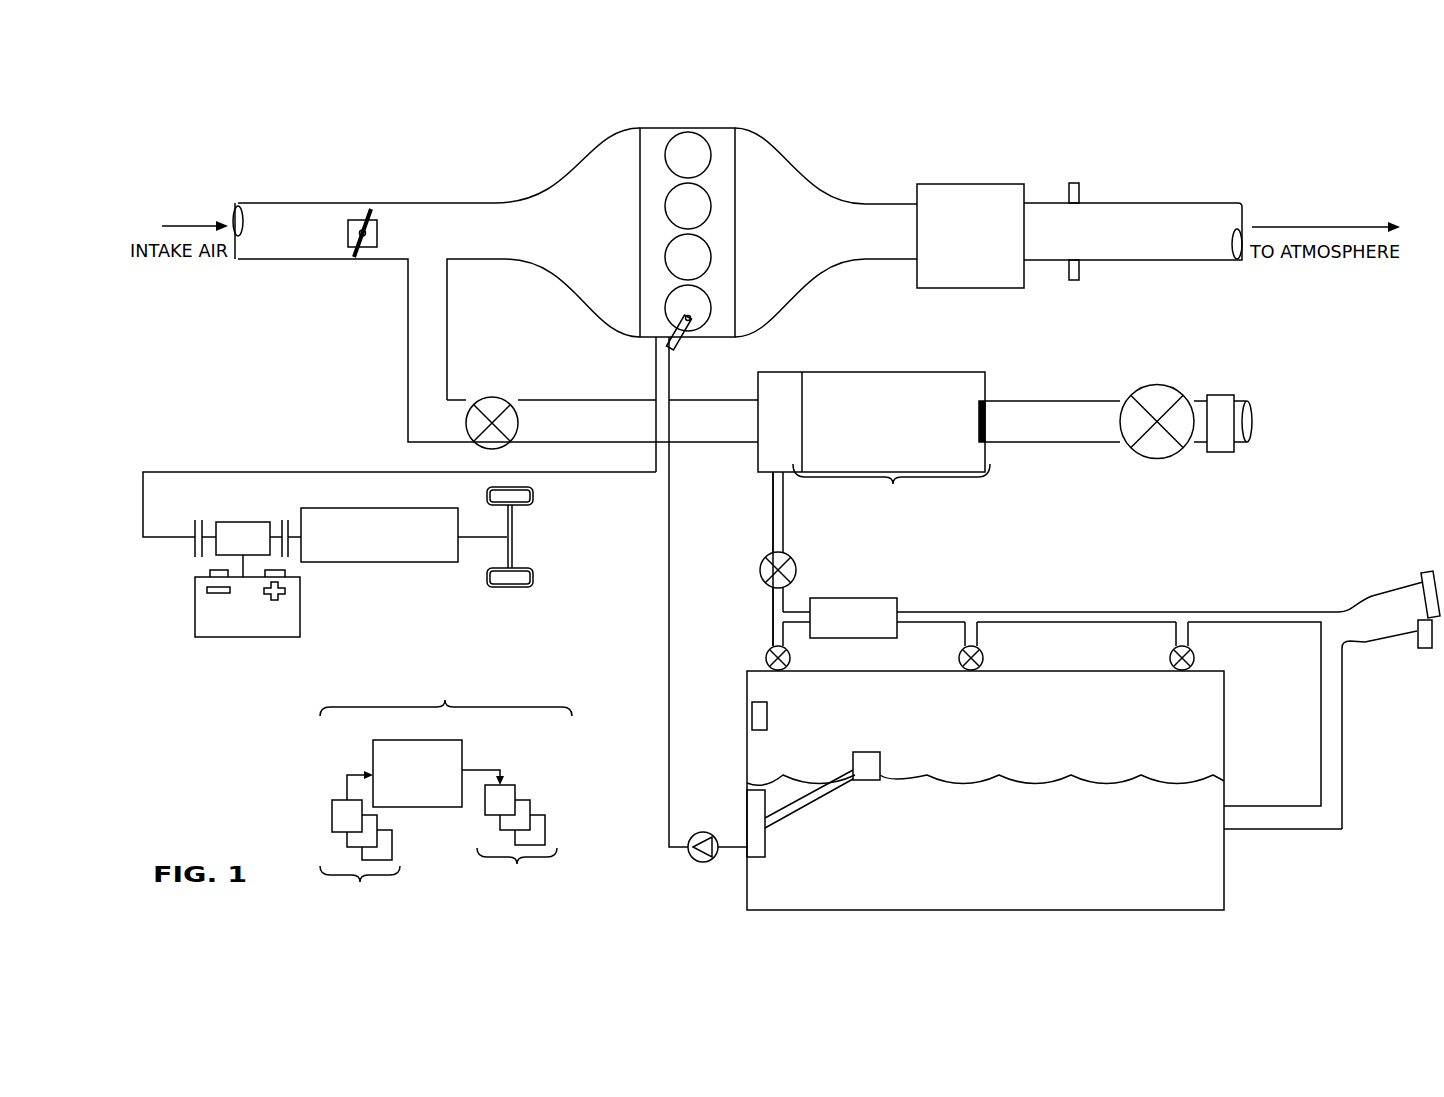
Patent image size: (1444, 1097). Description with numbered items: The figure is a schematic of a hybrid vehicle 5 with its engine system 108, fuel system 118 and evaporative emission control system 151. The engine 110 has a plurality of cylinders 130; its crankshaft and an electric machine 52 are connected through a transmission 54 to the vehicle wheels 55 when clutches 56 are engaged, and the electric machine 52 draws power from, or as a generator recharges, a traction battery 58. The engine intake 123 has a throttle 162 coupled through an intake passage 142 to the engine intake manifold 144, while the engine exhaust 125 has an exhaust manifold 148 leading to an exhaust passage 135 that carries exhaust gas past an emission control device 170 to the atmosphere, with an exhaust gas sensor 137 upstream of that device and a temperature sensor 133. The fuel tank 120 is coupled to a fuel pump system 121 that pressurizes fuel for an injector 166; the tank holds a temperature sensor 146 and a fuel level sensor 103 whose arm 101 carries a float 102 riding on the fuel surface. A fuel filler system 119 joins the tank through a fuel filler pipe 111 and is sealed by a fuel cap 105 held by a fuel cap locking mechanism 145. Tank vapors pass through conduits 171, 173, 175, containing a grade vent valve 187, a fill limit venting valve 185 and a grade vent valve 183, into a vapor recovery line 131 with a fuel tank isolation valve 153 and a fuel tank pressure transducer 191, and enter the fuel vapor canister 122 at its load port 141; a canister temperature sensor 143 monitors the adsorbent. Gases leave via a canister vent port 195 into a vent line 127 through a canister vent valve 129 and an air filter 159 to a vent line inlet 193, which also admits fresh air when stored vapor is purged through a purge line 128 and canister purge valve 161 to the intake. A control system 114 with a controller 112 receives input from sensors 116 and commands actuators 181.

The hybrid vehicle 5 is at (1343, 139).
The electric machine 52 is at (250, 522).
The transmission 54 is at (435, 562).
The vehicle wheels 55 is at (512, 587).
The clutch 56 is at (195, 527).
The traction battery 58 is at (240, 637).
The arm 101 is at (795, 812).
The float 102 is at (867, 752).
The fuel level sensor 103 is at (757, 858).
The fuel cap 105 is at (1430, 573).
The engine system 108 is at (1030, 142).
The engine 110 is at (737, 213).
The fuel filler pipe 111 is at (1342, 722).
The controller 112 is at (417, 773).
The control system 114 is at (446, 704).
The sensors 116 is at (360, 846).
The fuel system 118 is at (1278, 870).
The fuel filler system 119 is at (1394, 565).
The fuel tank 120 is at (1224, 771).
The fuel pump system 121 is at (698, 833).
The fuel vapor canister 122 is at (985, 394).
The engine intake 123 is at (544, 177).
The engine exhaust 125 is at (835, 177).
The vent line 127 is at (1096, 421).
The purge line 128 is at (602, 592).
The canister vent valve 129 is at (1152, 385).
The cylinders 130 is at (706, 152).
The vapor recovery line 131 is at (784, 498).
The temperature sensor 133 is at (1068, 267).
The exhaust passage 135 is at (1190, 203).
The exhaust gas sensor 137 is at (1068, 197).
The load port 141 is at (780, 372).
The intake passage 142 is at (399, 260).
The canister temperature sensor 143 is at (891, 489).
The engine intake manifold 144 is at (567, 232).
The fuel cap locking mechanism 145 is at (1427, 648).
The temperature sensor 146 is at (752, 718).
The exhaust manifold 148 is at (826, 232).
The evaporative emission control system 151 is at (1262, 354).
The fuel tank isolation valve 153 is at (796, 562).
The air filter 159 is at (1230, 395).
The canister purge valve 161 is at (488, 397).
The throttle 162 is at (377, 238).
The injector 166 is at (680, 344).
The emission control device 170 is at (971, 176).
The conduit 171 is at (787, 632).
The conduit 173 is at (965, 627).
The conduit 175 is at (1172, 633).
The actuators 181 is at (509, 837).
The grade vent valve 183 is at (1193, 659).
The fill limit venting valve 185 is at (983, 658).
The grade vent valve 187 is at (766, 655).
The fuel tank pressure transducer 191 is at (853, 598).
The vent line inlet 193 is at (1252, 432).
The canister vent port 195 is at (985, 420).